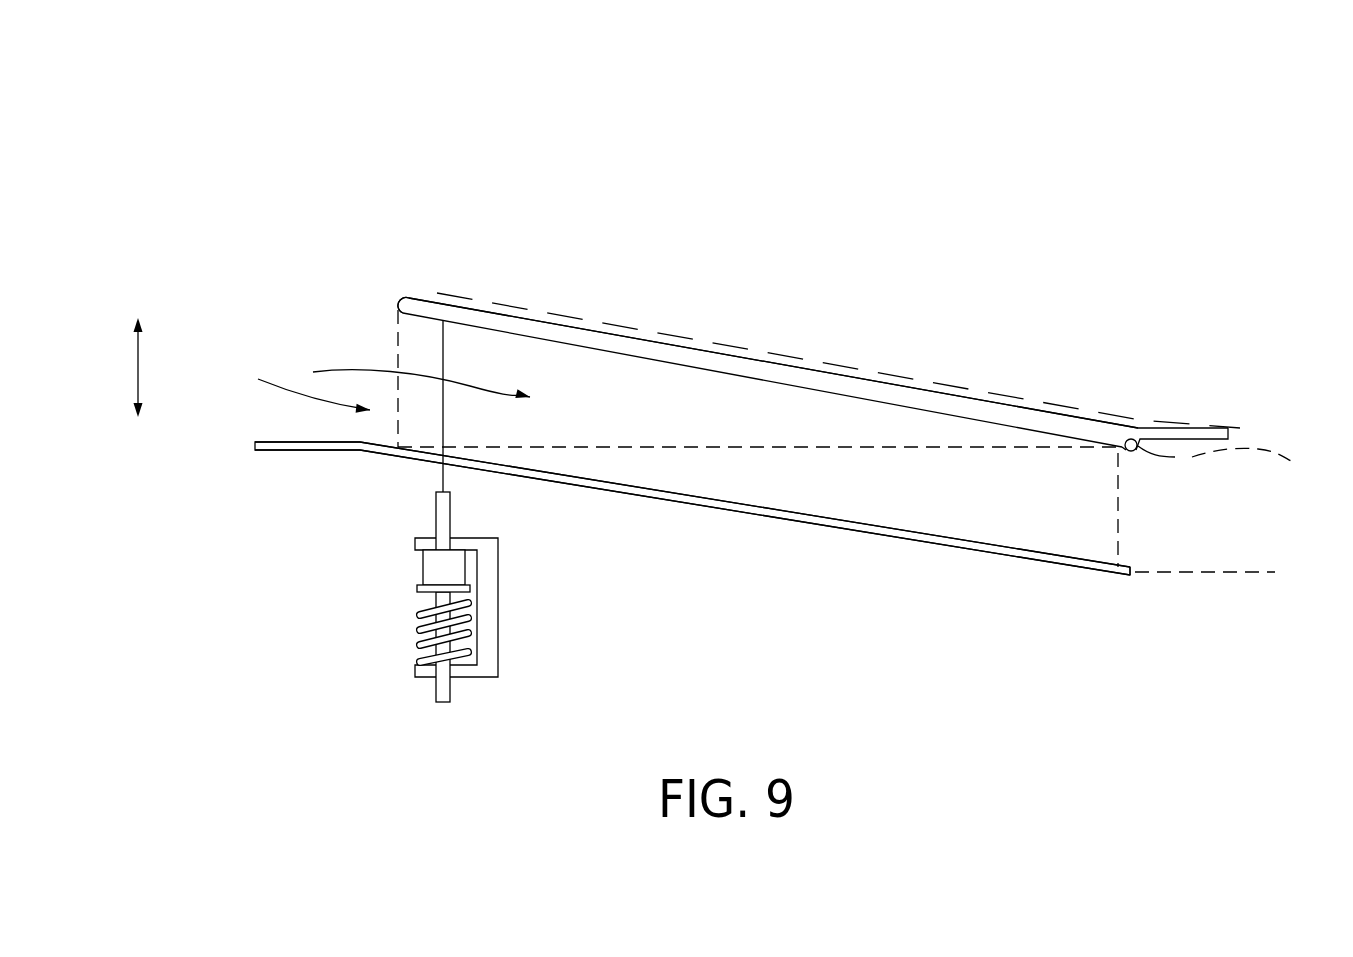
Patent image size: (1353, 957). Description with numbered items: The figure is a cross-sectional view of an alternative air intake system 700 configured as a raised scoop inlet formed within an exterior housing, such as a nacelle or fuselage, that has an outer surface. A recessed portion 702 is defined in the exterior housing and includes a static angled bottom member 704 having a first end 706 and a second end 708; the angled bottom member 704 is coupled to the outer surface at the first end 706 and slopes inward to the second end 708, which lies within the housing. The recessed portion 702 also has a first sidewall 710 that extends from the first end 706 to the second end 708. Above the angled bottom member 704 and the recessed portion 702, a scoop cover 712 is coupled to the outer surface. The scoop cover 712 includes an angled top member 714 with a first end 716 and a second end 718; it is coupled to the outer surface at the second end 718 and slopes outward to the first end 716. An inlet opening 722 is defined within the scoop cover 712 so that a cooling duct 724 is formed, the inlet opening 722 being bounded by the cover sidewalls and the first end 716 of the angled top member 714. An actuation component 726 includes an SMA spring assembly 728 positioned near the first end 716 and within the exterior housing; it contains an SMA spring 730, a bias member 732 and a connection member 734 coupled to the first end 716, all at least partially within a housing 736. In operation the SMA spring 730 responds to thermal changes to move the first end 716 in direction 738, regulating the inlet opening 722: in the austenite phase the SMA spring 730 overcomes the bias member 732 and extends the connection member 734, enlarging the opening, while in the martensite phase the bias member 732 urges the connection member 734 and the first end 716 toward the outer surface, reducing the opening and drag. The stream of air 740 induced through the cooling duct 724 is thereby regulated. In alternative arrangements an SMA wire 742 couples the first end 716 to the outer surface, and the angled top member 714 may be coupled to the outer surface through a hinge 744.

The air intake system 700 is at (1108, 186).
The recessed portion 702 is at (775, 465).
The angled bottom member 704 is at (872, 535).
The first end 706 is at (350, 453).
The second end 708 is at (1130, 575).
The first sidewall 710 is at (1033, 511).
The scoop cover 712 is at (532, 222).
The angled top member 714 is at (645, 342).
The first end 716 is at (406, 298).
The second end 718 is at (1104, 422).
The inlet opening 722 is at (286, 383).
The cooling duct 724 is at (1237, 528).
The actuation component 726 is at (439, 545).
The SMA spring assembly 728 is at (560, 595).
The SMA spring 730 is at (425, 625).
The bias member 732 is at (422, 563).
The connection member 734 is at (445, 478).
The housing 736 is at (498, 647).
The direction 738 is at (138, 366).
The stream of air 740 is at (363, 370).
The SMA wire 742 is at (865, 362).
The hinge 744 is at (1240, 464).